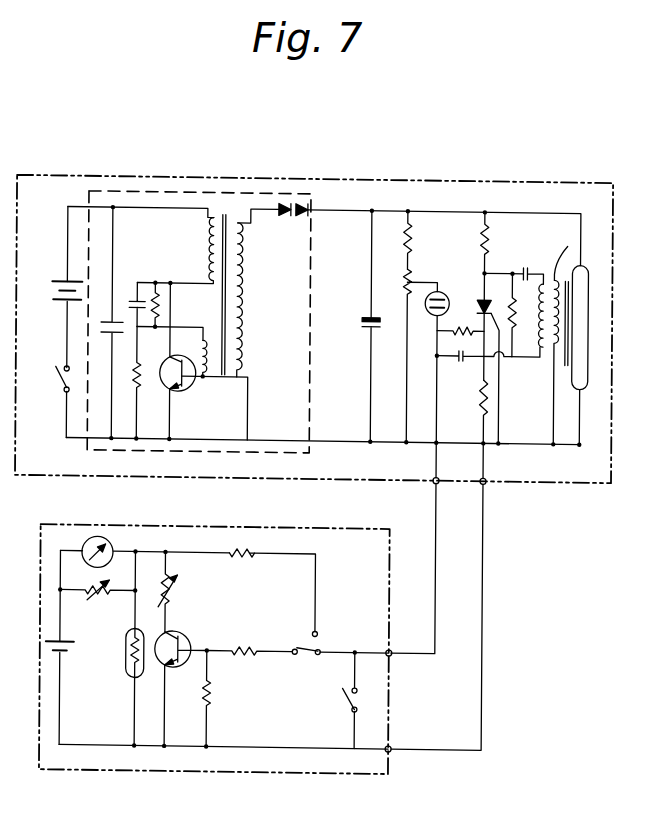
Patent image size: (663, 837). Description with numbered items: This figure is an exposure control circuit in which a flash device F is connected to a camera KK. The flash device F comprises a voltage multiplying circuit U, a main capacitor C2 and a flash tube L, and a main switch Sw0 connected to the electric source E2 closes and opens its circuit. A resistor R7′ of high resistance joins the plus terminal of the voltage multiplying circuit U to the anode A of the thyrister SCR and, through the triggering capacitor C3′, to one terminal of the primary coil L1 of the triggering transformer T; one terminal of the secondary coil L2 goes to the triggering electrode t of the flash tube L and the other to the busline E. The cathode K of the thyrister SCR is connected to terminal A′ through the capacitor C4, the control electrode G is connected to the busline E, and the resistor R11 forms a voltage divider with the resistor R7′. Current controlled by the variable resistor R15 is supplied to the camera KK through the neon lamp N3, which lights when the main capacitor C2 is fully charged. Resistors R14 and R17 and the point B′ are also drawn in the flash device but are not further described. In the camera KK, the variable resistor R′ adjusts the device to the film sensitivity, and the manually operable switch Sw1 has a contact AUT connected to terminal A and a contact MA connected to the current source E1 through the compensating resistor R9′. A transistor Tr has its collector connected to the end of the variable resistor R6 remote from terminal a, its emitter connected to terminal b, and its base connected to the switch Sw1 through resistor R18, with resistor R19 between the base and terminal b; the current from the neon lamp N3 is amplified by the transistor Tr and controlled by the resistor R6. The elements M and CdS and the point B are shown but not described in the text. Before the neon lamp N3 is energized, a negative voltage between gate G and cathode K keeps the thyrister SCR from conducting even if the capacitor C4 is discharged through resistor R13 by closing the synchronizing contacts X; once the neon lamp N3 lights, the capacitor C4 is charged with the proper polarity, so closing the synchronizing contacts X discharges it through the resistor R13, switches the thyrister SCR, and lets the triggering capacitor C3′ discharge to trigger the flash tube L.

The flash device F is at (116, 179).
The voltage multiplying circuit U is at (308, 262).
The electric source E2 is at (55, 287).
The main switch Sw0 is at (48, 401).
The main capacitor C2 is at (357, 326).
The resistor R14 is at (393, 239).
The variable resistor R15 is at (405, 357).
The resistor of high resistance R7′ is at (470, 242).
The thyrister SCR is at (469, 326).
The anode / camera terminal A is at (449, 476).
The cathode K is at (434, 346).
The control electrode G is at (500, 346).
The neon lamp N3 is at (429, 367).
The resistor R17 is at (460, 322).
The capacitor C4 is at (487, 368).
The resistor R13 is at (461, 413).
The resistor R11 is at (525, 314).
The triggering capacitor C3′ is at (513, 264).
The triggering transformer T is at (548, 277).
The primary coil L1 is at (541, 327).
The secondary coil L2 is at (552, 362).
The triggering electrode t is at (560, 252).
The flash tube L is at (581, 262).
The busline E is at (503, 442).
The terminal A′ is at (423, 548).
The terminal B' B′ is at (446, 596).
The camera KK is at (347, 527).
The meter M is at (110, 537).
The current source E1 is at (62, 647).
The variable resistor R′ is at (98, 598).
The terminal a is at (132, 541).
The terminal b is at (131, 755).
The photoconductive cell CdS is at (110, 648).
The variable resistor R6 is at (174, 591).
The transistor Tr is at (187, 634).
The resistor R19 is at (220, 698).
The compensating resistor R9′ is at (240, 567).
The resistor R18 is at (249, 638).
The manually operable SPDT switch Sw1 is at (326, 636).
The contact MA is at (334, 632).
The contact AUT is at (298, 666).
The synchronizing contacts X is at (344, 700).
The terminal B is at (394, 739).